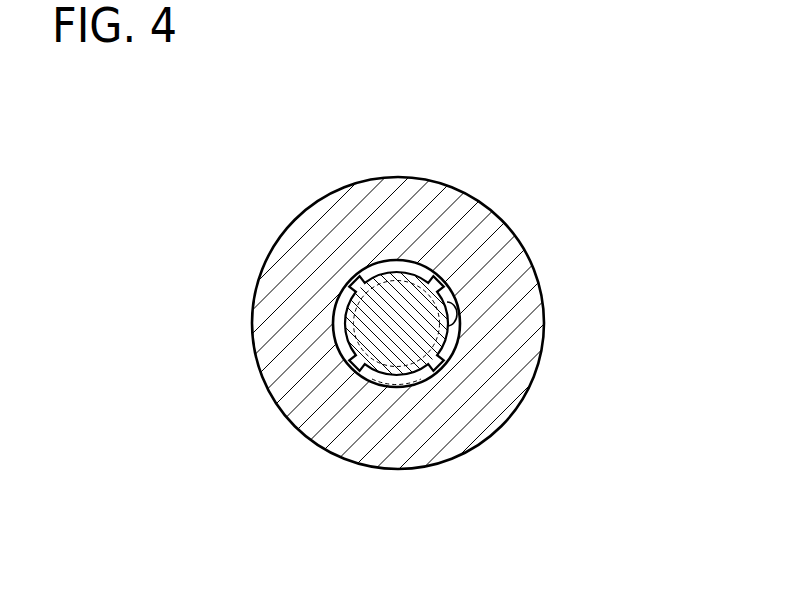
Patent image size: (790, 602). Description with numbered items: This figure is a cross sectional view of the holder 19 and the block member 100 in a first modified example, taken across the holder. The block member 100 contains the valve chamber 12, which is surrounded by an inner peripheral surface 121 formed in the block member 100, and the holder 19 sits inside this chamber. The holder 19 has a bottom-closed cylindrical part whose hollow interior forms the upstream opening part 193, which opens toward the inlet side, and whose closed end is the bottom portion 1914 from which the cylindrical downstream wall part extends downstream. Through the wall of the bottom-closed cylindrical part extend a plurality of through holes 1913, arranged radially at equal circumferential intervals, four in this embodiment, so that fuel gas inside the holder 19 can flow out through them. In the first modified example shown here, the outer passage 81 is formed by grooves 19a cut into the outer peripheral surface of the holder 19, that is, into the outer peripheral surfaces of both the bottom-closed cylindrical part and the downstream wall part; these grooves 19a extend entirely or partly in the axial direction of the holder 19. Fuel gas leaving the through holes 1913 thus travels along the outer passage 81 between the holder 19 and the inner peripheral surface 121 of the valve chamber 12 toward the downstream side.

The block member 100 is at (544, 276).
The holder 19 is at (371, 271).
The through holes 1913 is at (391, 285).
The bottom portion 1914 is at (356, 298).
The grooves 19a is at (452, 292).
The upstream opening part 193 is at (350, 352).
The inner peripheral surface 121 is at (455, 322).
The valve chamber 12 is at (442, 348).
The outer passage 81 is at (398, 384).